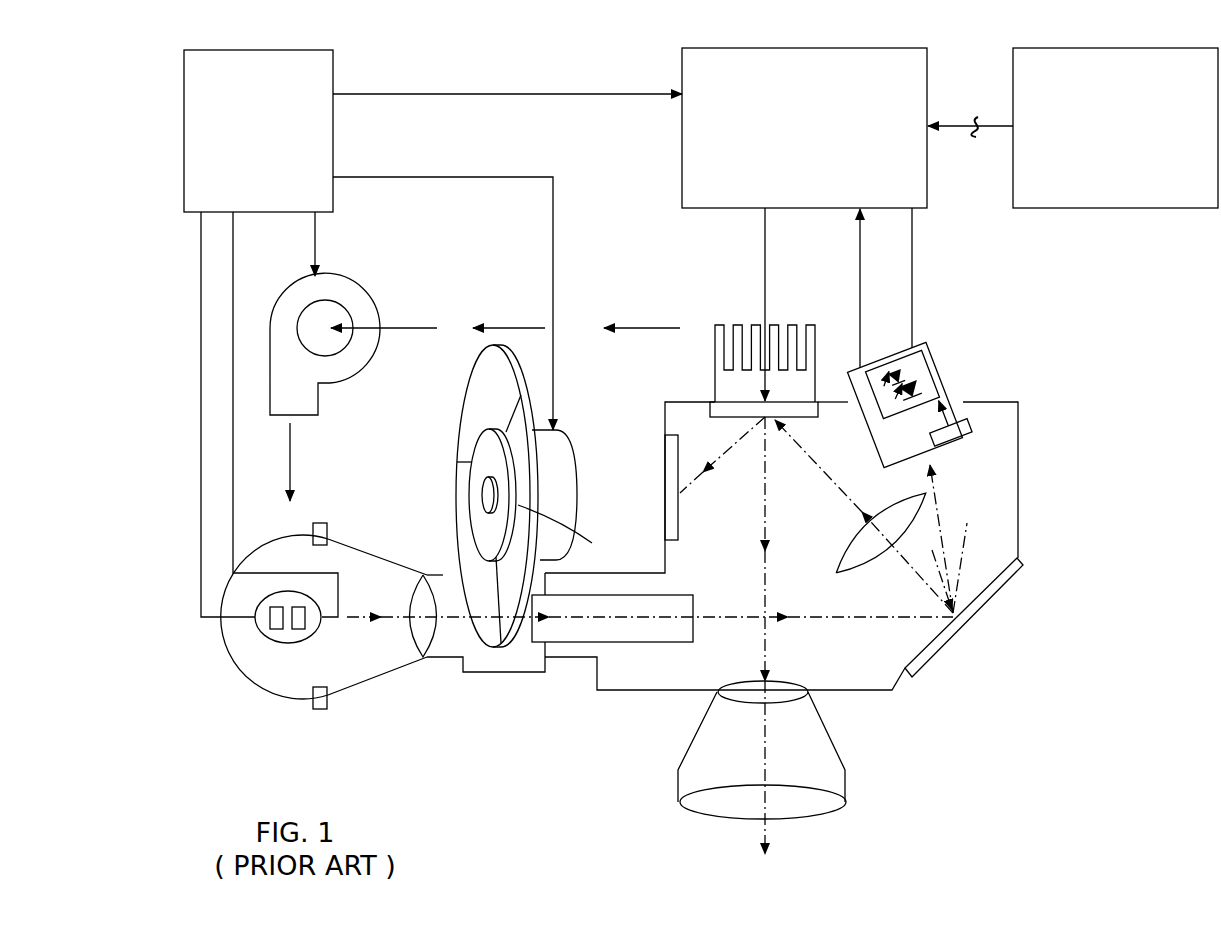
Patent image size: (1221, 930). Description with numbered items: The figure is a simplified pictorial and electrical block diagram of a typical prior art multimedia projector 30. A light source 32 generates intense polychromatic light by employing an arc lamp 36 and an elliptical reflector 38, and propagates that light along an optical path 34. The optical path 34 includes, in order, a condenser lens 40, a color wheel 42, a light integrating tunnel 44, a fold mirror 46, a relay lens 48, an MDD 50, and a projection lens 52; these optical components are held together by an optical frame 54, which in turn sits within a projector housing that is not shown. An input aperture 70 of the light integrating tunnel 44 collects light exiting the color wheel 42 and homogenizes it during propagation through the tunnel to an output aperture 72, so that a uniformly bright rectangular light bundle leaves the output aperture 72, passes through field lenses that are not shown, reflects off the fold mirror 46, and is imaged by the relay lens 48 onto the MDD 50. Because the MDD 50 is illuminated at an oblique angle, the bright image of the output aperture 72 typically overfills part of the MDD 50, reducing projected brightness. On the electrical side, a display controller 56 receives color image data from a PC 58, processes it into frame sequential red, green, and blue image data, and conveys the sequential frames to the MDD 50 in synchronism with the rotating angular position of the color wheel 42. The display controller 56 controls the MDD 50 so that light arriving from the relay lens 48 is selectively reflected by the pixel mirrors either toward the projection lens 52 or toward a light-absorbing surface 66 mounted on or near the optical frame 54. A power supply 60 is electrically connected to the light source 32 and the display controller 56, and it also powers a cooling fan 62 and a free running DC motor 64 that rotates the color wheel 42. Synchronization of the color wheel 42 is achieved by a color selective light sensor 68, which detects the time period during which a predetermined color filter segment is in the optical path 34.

The multimedia projector 30 is at (1047, 735).
The light source 32 is at (303, 632).
The optical path 34 is at (727, 616).
The arc lamp 36 is at (275, 633).
The elliptical reflector 38 is at (270, 690).
The condenser lens 40 is at (418, 633).
The color wheel 42 is at (444, 461).
The light integrating tunnel 44 is at (608, 628).
The fold mirror 46 is at (985, 597).
The relay lens 48 is at (862, 547).
The MDD 50 is at (722, 408).
The projection lens 52 is at (826, 752).
The optical frame 54 is at (371, 548).
The display controller 56 is at (692, 83).
The PC 58 is at (1028, 83).
The power supply 60 is at (322, 80).
The cooling fan 62 is at (352, 304).
The DC motor 64 is at (565, 480).
The light-absorbing surface 66 is at (678, 520).
The color selective light sensor 68 is at (964, 385).
The input aperture 70 is at (533, 650).
The output aperture 72 is at (695, 612).